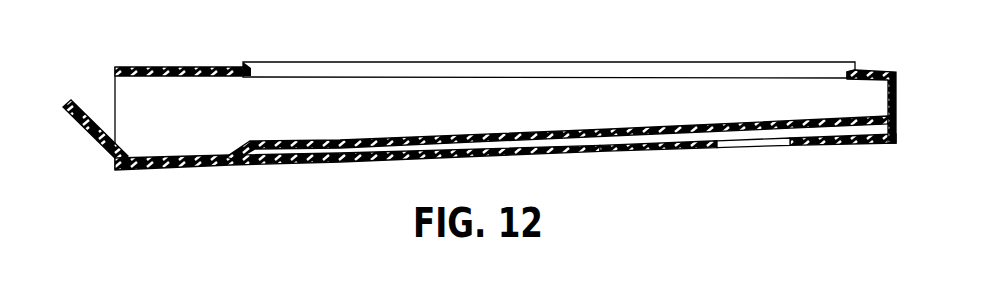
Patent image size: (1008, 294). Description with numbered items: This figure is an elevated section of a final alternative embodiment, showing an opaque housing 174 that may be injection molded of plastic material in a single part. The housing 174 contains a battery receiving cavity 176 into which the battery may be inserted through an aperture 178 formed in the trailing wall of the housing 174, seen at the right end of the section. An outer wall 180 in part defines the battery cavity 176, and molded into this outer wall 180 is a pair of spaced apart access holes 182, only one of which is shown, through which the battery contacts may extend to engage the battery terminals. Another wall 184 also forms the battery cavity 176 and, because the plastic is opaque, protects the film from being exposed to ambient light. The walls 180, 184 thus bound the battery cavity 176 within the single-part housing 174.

The opaque housing 174 is at (642, 58).
The battery cavity 176 is at (556, 151).
The aperture 178 is at (896, 130).
The outer wall 180 is at (640, 149).
The access holes 182 is at (752, 146).
The wall 184 is at (521, 132).